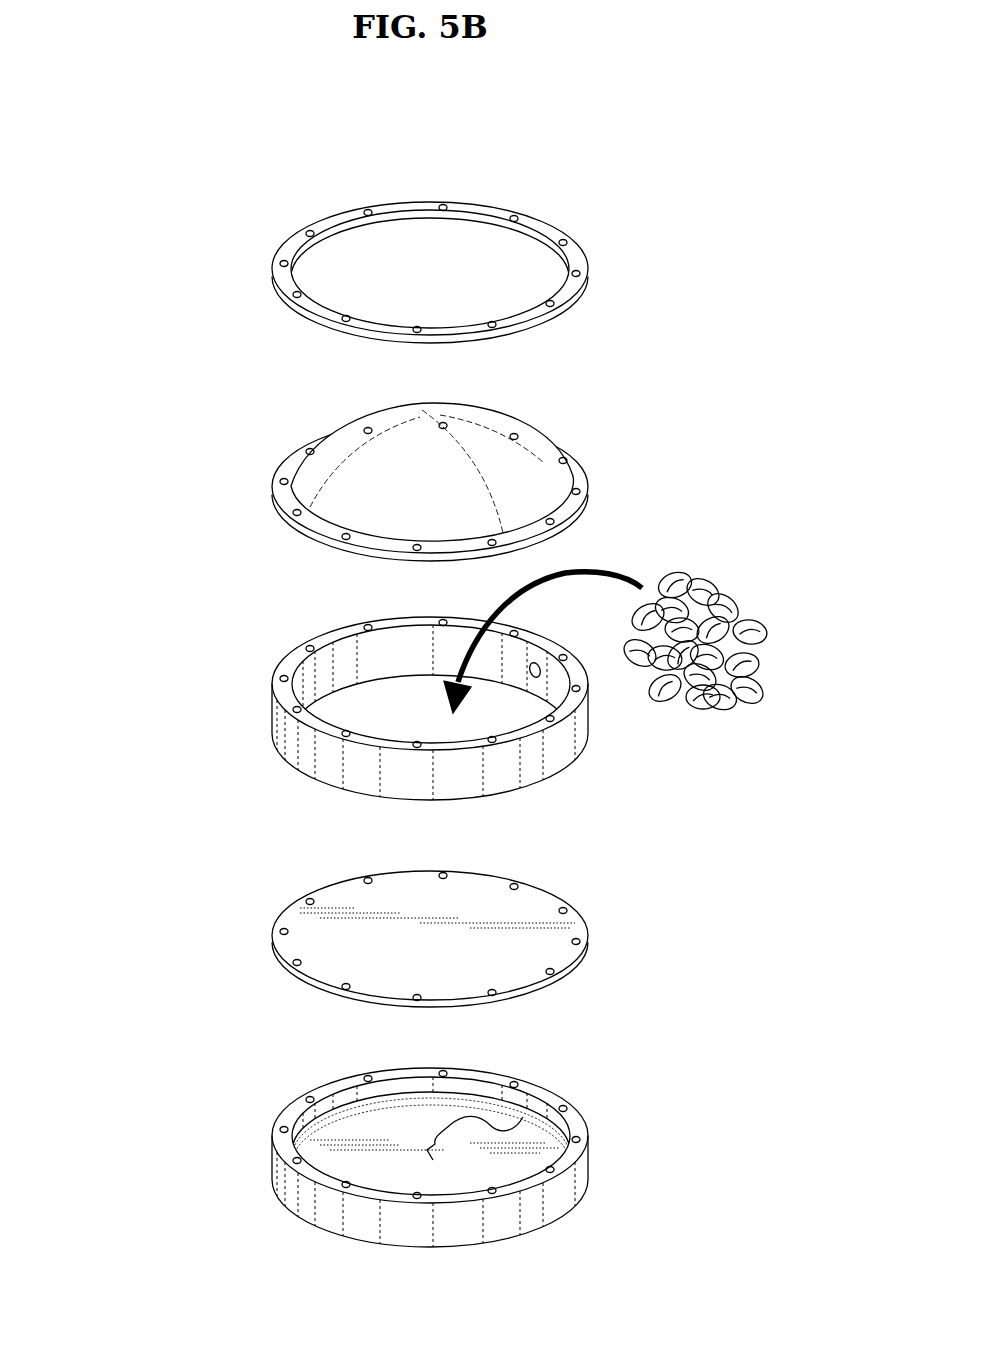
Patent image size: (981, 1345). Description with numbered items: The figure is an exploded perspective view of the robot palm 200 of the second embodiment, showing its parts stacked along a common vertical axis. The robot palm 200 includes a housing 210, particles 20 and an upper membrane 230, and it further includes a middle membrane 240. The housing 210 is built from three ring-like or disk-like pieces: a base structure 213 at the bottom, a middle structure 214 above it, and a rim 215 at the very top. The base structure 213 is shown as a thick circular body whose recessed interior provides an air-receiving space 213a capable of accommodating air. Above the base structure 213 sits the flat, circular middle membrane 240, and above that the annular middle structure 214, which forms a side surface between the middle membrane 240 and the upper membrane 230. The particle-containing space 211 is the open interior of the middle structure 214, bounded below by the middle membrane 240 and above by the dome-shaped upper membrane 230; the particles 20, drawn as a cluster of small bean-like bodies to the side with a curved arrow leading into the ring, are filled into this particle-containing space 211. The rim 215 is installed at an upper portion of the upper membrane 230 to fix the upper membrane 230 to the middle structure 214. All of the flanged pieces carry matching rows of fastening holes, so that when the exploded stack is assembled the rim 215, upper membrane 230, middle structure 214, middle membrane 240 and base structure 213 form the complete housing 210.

The robot palm 200 is at (237, 178).
The housing 210 is at (155, 265).
The rim 215 is at (275, 274).
The upper membrane 230 is at (583, 467).
The middle structure 214 is at (275, 719).
The particle-containing space 211 is at (396, 712).
The particles 20 is at (730, 597).
The middle membrane 240 is at (583, 918).
The base structure 213 is at (275, 1165).
The air-receiving space 213a is at (523, 1117).